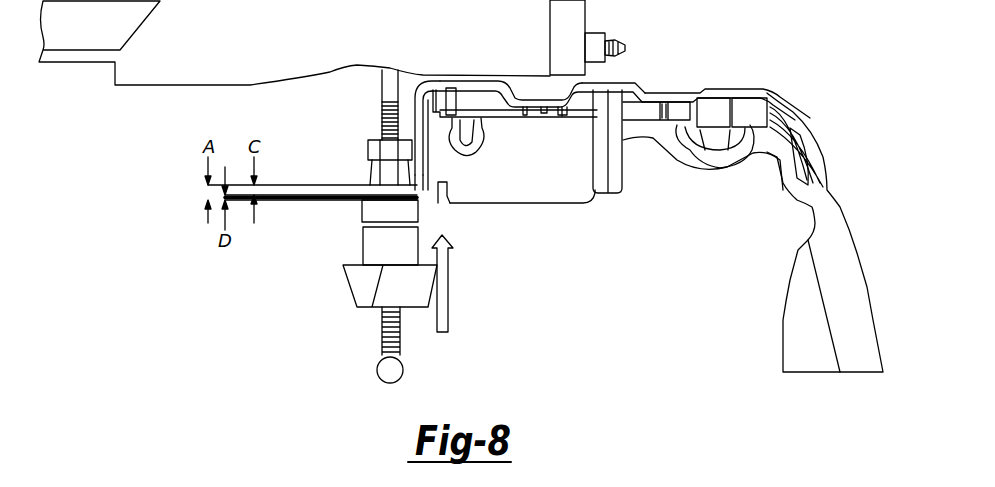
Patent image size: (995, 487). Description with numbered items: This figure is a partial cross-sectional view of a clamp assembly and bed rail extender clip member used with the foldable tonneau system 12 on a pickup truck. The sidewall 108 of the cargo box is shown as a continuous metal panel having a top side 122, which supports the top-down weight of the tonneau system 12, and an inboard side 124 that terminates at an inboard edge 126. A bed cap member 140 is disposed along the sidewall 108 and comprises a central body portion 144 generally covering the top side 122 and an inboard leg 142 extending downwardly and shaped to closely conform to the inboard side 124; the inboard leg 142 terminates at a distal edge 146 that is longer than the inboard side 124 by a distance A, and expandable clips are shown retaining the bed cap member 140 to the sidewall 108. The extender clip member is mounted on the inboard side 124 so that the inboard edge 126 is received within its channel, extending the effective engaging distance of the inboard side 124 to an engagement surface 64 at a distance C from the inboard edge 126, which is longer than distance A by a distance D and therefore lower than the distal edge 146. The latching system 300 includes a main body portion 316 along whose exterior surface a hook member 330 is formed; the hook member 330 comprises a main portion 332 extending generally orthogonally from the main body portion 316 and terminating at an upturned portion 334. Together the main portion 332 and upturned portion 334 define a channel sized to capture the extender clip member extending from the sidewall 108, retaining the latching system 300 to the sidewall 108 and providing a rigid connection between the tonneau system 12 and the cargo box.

The foldable tonneau system 12 is at (792, 38).
The bed cap member 140 is at (748, 88).
The inboard leg 142 is at (417, 95).
The central body portion 144 is at (623, 82).
The inboard side 124 is at (427, 115).
The top side 122 is at (645, 130).
The left sidewall 108 is at (853, 243).
The inboard edge 126 is at (418, 187).
The engagement surface 64 is at (420, 198).
The hook member 330 is at (425, 208).
The main portion 332 is at (417, 213).
The upturned portion 334 is at (450, 185).
The latching system 300 is at (360, 308).
The main body portion 316 is at (362, 213).
The distal edge 146 is at (407, 198).